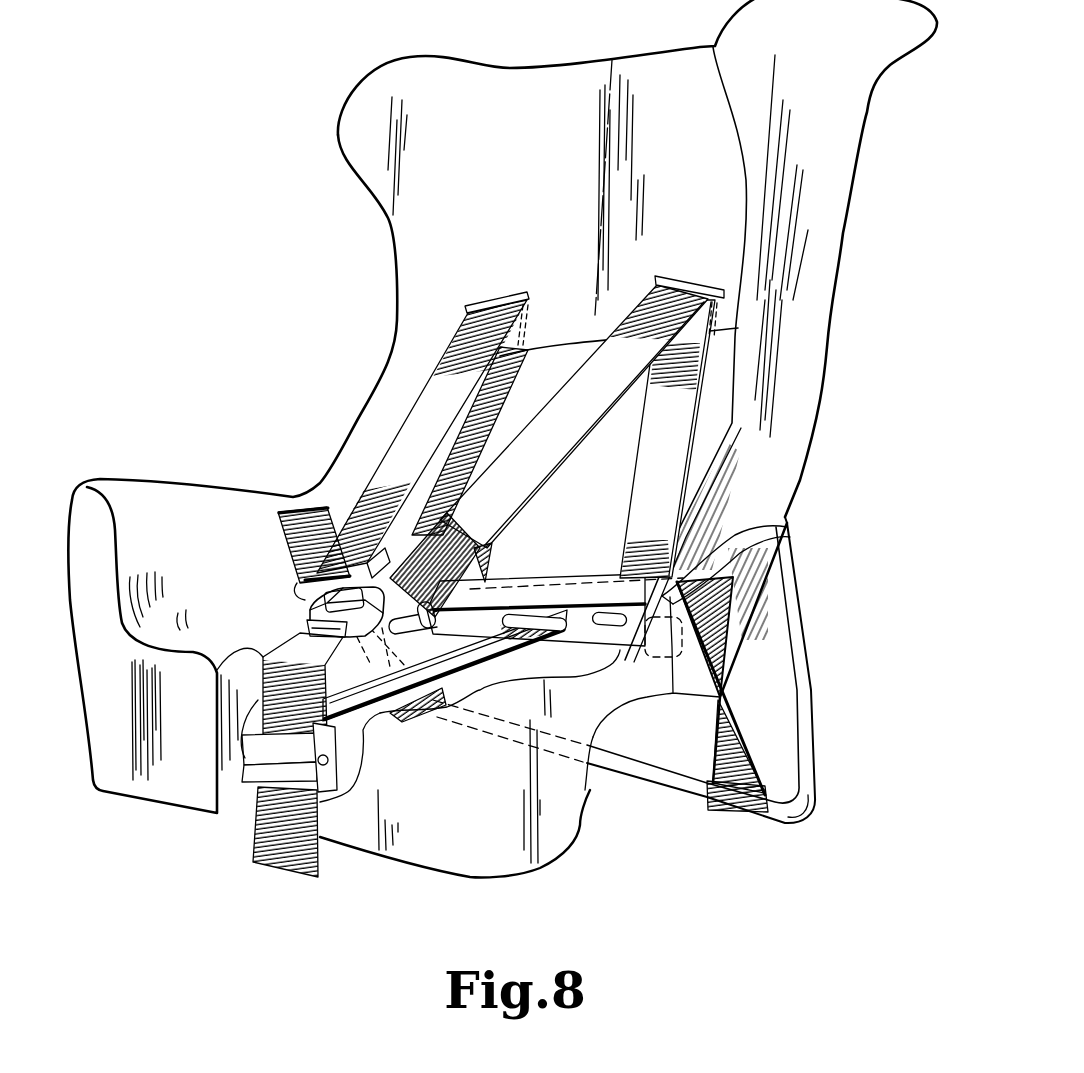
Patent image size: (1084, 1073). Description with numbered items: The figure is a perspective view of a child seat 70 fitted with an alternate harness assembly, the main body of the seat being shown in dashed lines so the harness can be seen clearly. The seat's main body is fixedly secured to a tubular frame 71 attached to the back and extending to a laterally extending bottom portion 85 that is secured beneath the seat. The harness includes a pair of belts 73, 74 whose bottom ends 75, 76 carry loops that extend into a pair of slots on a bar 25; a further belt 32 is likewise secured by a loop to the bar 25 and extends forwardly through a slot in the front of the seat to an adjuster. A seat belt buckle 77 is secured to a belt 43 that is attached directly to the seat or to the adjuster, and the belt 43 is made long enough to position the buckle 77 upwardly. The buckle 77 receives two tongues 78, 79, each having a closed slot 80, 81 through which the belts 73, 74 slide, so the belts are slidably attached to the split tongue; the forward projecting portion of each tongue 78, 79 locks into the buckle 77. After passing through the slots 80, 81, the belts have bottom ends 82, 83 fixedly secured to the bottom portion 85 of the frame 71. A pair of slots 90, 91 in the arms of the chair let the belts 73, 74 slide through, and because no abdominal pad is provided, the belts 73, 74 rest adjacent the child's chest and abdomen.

The seat 70 is at (870, 256).
The tubular frame 71 is at (803, 689).
The belt 73 is at (468, 313).
The belt 74 is at (613, 403).
The bottom end 75 is at (633, 507).
The bottom end 76 is at (492, 545).
The seat belt buckle 77 is at (310, 620).
The tongue 78 is at (372, 557).
The tongue 79 is at (400, 557).
The closed slot 80 is at (300, 588).
The closed slot 81 is at (424, 630).
The bottom end 82 is at (415, 717).
The bottom end 83 is at (765, 784).
The laterally extending bottom portion 85 is at (793, 811).
The slot 90 is at (735, 565).
The slot 91 is at (307, 510).
The belt 43 is at (290, 650).
The belt 32 is at (520, 648).
The bar 25 is at (597, 640).